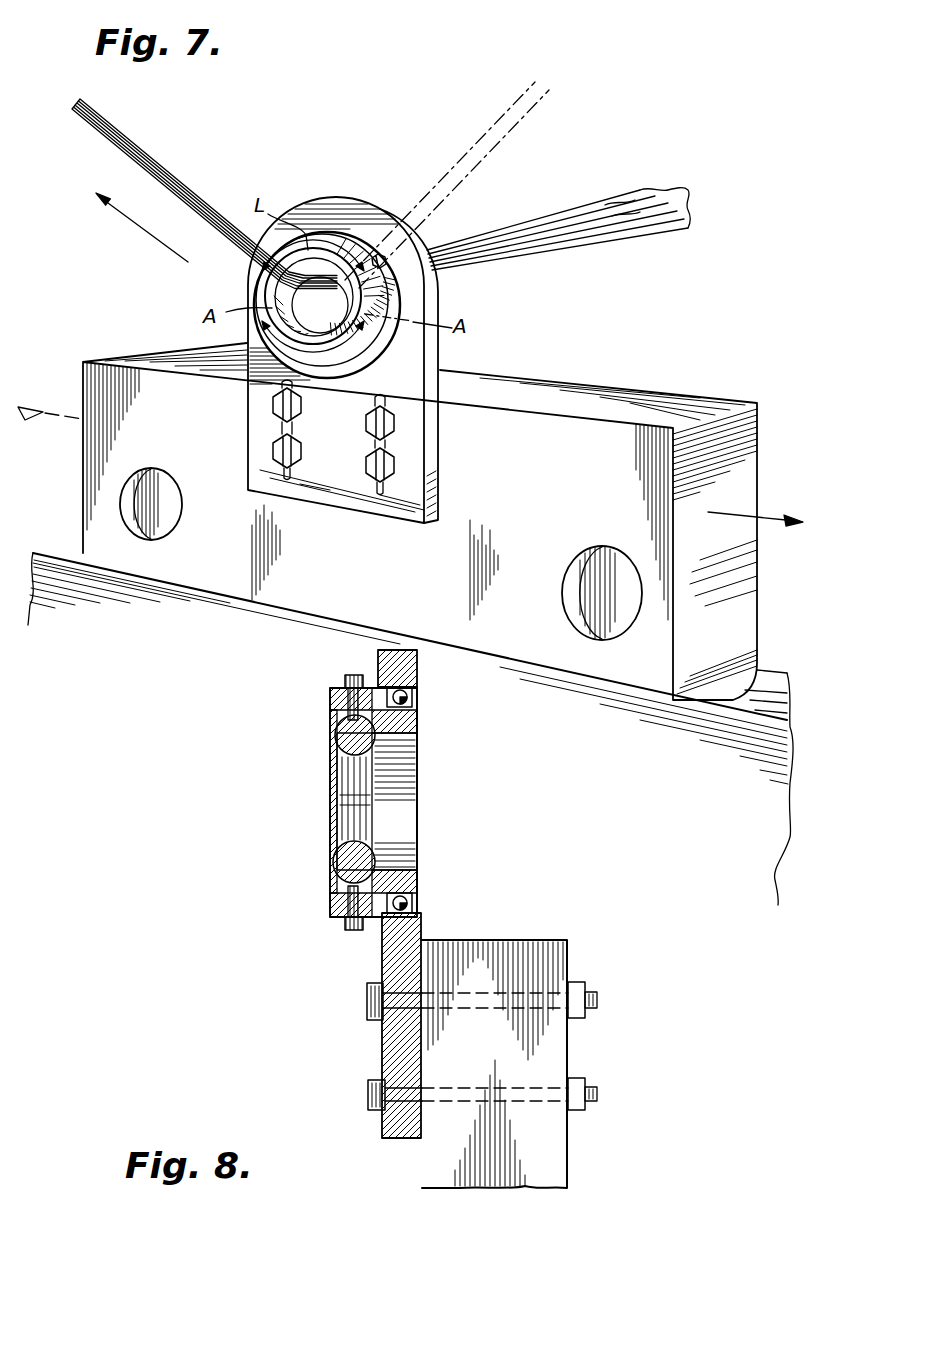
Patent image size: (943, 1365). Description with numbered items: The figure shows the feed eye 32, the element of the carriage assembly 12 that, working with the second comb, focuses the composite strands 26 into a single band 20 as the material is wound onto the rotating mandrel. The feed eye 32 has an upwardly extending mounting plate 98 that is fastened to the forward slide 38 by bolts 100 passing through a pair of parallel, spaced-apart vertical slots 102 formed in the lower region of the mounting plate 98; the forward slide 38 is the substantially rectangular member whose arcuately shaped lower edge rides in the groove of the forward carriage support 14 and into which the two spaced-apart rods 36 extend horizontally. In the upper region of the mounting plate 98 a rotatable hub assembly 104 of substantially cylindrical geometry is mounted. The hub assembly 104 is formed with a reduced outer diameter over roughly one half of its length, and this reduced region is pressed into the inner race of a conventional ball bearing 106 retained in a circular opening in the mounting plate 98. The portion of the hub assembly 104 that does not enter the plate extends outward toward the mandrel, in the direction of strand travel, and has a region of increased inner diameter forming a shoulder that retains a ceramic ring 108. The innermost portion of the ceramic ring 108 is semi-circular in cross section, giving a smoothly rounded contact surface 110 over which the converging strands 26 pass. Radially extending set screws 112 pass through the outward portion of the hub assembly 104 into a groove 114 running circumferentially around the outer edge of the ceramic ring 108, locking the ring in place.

In FIG. 7, the carriage assembly 12 is at (623, 697).
In FIG. 7, the forward carriage support 14 is at (168, 635).
In FIG. 7, the band 20 is at (157, 152).
In FIG. 7, the composite strands 26 is at (571, 229).
In FIG. 7, the feed eye 32 is at (495, 322).
In FIG. 8, the feed eye 32 is at (333, 1007).
In FIG. 7, the rods 36 is at (156, 527).
In FIG. 7, the forward slide 38 is at (376, 570).
In FIG. 8, the forward slide 38 is at (494, 1064).
In FIG. 7, the mounting plate 98 is at (430, 472).
In FIG. 8, the mounting plate 98 is at (408, 937).
In FIG. 7, the bolts 100 is at (270, 440).
In FIG. 8, the bolts 100 is at (598, 1075).
In FIG. 7, the vertical slots 102 is at (290, 470).
In FIG. 7, the hub assembly 104 is at (398, 353).
In FIG. 8, the hub assembly 104 is at (420, 717).
In FIG. 8, the ball bearing 106 is at (420, 697).
In FIG. 7, the ceramic ring 108 is at (272, 344).
In FIG. 8, the ceramic ring 108 is at (348, 752).
In FIG. 7, the contact surface 110 is at (306, 300).
In FIG. 8, the contact surface 110 is at (343, 833).
In FIG. 7, the set screws 112 is at (387, 262).
In FIG. 8, the set screws 112 is at (350, 677).
In FIG. 8, the groove 114 is at (355, 716).